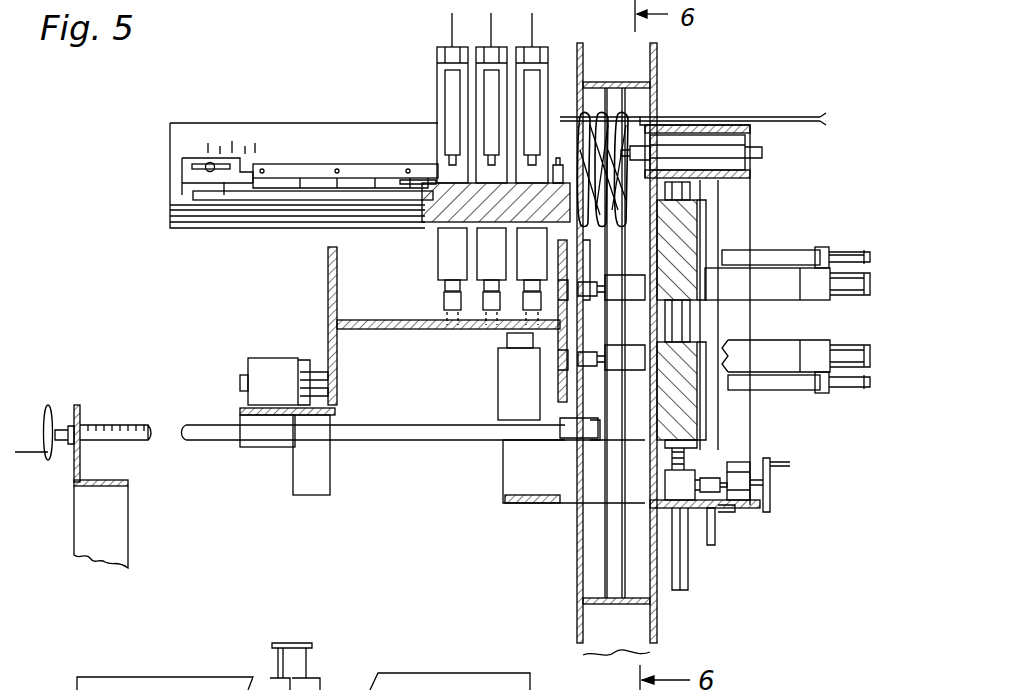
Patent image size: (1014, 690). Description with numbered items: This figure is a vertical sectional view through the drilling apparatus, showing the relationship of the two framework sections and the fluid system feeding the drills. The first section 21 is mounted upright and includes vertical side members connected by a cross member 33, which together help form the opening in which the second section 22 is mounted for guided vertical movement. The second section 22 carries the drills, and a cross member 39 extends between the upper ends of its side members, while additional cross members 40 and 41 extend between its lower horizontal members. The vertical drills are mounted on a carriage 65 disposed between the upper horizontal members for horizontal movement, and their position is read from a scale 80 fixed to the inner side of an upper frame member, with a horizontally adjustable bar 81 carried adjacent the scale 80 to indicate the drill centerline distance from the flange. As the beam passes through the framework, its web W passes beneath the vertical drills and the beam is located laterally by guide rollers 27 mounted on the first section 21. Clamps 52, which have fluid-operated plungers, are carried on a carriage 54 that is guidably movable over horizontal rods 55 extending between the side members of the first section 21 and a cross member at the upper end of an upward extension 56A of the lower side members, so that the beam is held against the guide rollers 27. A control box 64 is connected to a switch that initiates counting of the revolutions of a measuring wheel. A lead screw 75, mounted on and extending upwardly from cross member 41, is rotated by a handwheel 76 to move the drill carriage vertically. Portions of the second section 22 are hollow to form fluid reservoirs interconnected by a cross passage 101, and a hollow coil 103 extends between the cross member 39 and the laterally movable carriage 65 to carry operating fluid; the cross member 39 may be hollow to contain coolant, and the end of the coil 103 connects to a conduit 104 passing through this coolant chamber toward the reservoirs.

The scale 80 is at (253, 145).
The bar 81 is at (185, 181).
The carriage 65 is at (430, 224).
The web W is at (375, 332).
The guide rollers 27 is at (575, 393).
The horizontal rods 55 is at (398, 443).
The carriage 54 is at (262, 448).
The clamps 52 is at (268, 358).
The control box 64 is at (318, 496).
The upward extension 56A is at (120, 553).
The first section 21 is at (580, 583).
The hollow coil 103 is at (630, 116).
The conduit 104 is at (705, 135).
The cross member 39 is at (740, 172).
The second section 22 is at (750, 320).
The cross member 40 is at (532, 503).
The lead screw 75 is at (668, 458).
The cross passage 101 is at (738, 462).
The handwheel 76 is at (772, 480).
The cross member 41 is at (715, 535).
The cross member 33 is at (408, 672).